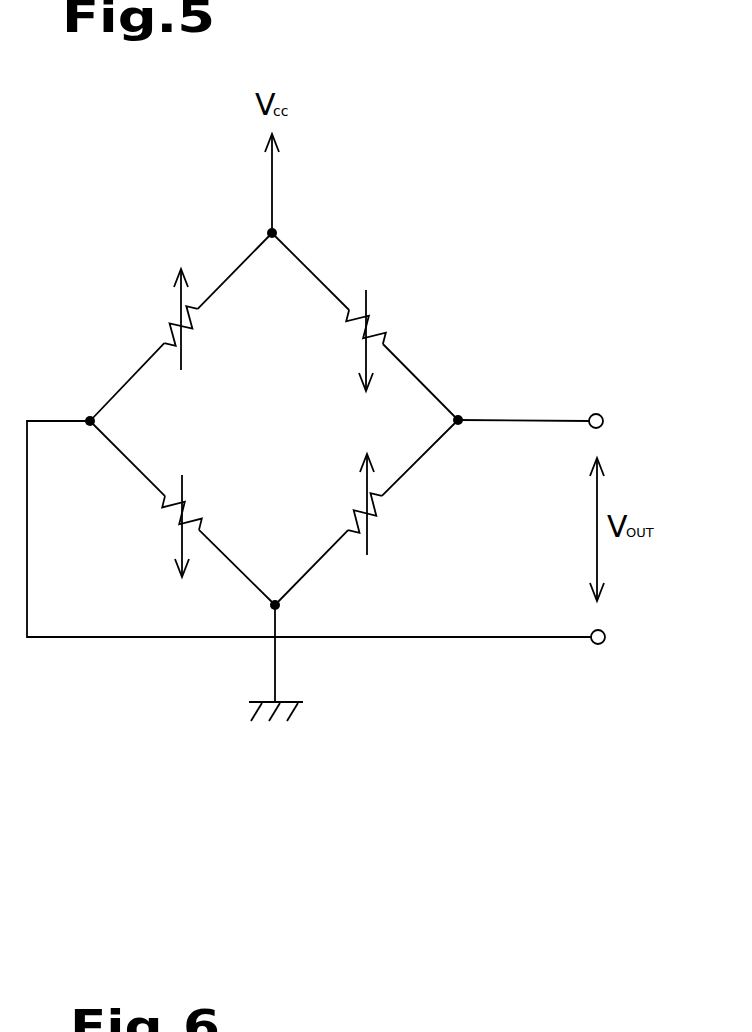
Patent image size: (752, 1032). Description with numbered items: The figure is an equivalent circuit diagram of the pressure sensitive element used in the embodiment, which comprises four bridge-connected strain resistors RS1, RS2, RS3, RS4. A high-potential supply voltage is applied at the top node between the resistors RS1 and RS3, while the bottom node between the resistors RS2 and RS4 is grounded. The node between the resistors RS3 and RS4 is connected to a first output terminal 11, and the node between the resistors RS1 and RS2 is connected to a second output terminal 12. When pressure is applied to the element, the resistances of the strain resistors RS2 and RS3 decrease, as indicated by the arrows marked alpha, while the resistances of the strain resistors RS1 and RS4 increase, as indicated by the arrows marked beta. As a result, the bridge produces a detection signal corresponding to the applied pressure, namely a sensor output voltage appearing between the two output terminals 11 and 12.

The strain resistor RS1 is at (160, 319).
The strain resistor RS2 is at (159, 518).
The strain resistor RS3 is at (376, 316).
The strain resistor RS4 is at (395, 502).
The first output terminal 11 is at (602, 415).
The second output terminal 12 is at (604, 631).